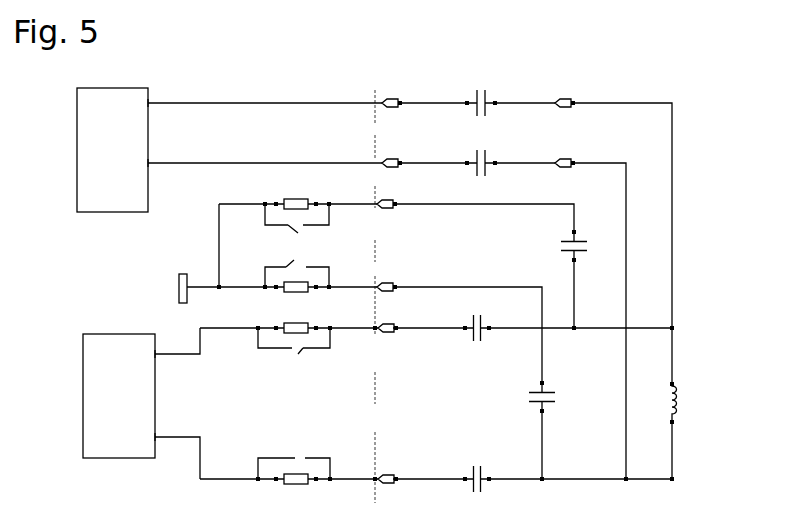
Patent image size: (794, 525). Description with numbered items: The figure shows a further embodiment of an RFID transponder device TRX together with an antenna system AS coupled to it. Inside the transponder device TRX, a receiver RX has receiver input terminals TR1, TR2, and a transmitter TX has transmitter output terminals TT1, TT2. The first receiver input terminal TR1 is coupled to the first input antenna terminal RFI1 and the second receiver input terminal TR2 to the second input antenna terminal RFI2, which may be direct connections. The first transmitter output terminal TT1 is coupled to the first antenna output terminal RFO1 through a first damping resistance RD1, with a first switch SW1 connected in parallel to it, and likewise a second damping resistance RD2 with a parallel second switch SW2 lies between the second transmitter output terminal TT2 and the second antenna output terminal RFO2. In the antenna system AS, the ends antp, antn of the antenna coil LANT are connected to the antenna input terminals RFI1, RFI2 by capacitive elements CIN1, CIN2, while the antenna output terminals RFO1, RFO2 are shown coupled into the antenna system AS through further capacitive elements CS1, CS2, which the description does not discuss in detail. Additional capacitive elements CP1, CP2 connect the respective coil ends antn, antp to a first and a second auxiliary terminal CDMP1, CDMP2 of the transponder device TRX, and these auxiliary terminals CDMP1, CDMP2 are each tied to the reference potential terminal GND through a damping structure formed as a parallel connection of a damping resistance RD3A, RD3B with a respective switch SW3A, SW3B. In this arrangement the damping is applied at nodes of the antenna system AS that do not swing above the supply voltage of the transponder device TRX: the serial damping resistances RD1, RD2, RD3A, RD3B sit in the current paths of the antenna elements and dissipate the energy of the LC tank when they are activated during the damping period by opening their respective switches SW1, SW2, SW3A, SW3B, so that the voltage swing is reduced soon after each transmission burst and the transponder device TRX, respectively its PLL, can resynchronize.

The RFID transponder device TRX is at (295, 39).
The antenna system AS is at (698, 142).
The receiver RX is at (112, 150).
The transmitter TX is at (119, 396).
The first receiver input terminal TR1 is at (150, 103).
The second receiver input terminal TR2 is at (150, 163).
The first transmitter output terminal TT1 is at (155, 354).
The second transmitter output terminal TT2 is at (155, 437).
The first input antenna terminal RFI1 is at (406, 117).
The second input antenna terminal RFI2 is at (406, 153).
The first antenna output terminal RFO1 is at (409, 318).
The second antenna output terminal RFO2 is at (409, 468).
The first auxiliary terminal CDMP1 is at (420, 218).
The second auxiliary terminal CDMP2 is at (420, 272).
The capacitive element CIN1 is at (502, 98).
The capacitive element CIN2 is at (502, 159).
The end of the antenna coil antp is at (581, 93).
The end of the antenna coil antn is at (581, 154).
The capacitive element CP1 is at (567, 399).
The capacitive element CP2 is at (592, 253).
The series capacitor 1 CS1 is at (496, 322).
The series capacitor 2 CS2 is at (496, 474).
The antenna coil LANT is at (705, 407).
The first damping resistance RD1 is at (304, 328).
The second damping resistance RD2 is at (290, 485).
The damping resistance RD3A is at (289, 202).
The damping resistance RD3B is at (288, 294).
The first switch SW1 is at (296, 360).
The second switch SW2 is at (296, 456).
The switch SW3A is at (295, 236).
The switch SW3B is at (270, 262).
The reference potential terminal GND is at (177, 290).